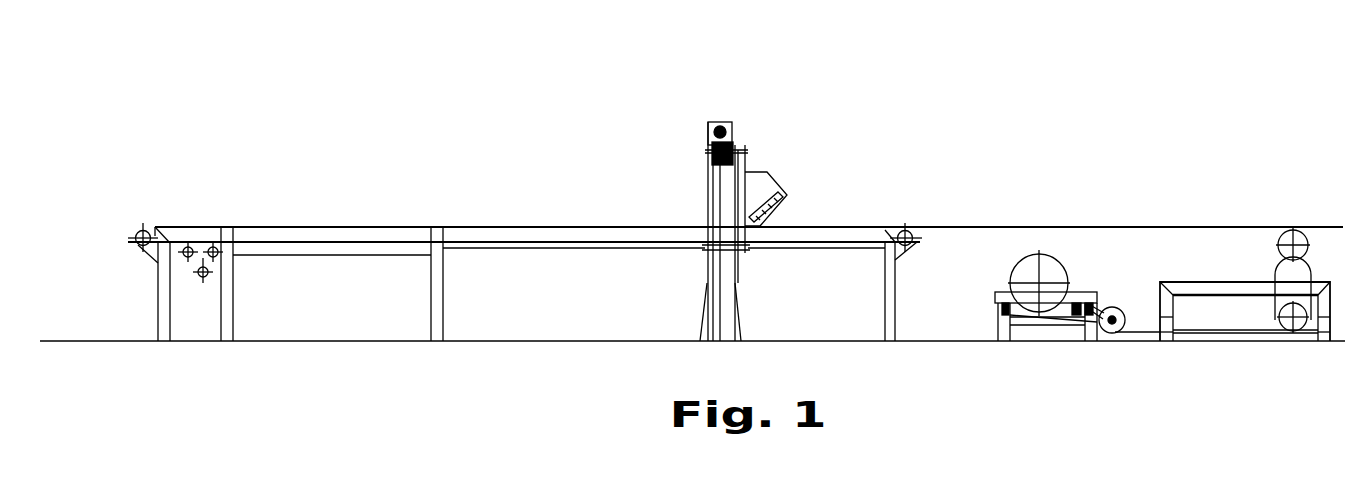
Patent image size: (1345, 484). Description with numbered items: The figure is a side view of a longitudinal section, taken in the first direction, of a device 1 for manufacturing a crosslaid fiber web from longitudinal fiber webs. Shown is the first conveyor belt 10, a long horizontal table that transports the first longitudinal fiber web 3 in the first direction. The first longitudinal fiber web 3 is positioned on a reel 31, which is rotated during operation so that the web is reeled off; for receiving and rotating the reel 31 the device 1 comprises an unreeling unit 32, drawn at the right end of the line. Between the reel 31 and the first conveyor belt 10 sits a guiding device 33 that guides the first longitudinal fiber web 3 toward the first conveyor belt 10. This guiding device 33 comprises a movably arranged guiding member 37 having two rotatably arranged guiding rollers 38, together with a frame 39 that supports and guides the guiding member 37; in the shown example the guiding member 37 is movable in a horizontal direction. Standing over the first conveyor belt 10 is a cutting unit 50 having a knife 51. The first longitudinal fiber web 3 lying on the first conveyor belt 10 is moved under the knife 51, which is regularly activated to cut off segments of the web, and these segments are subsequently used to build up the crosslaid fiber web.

The device 1 is at (498, 174).
The first longitudinal fiber web 3 is at (993, 228).
The first conveyor belt 10 is at (600, 228).
The reel 31 is at (1050, 272).
The unreeling unit 32 is at (1046, 372).
The guiding device 33 is at (1236, 283).
The guiding member 37 is at (1277, 258).
The guiding roller 38 is at (1303, 232).
The frame 39 is at (1213, 287).
The cutting unit 50 is at (680, 159).
The knife 51 is at (763, 181).